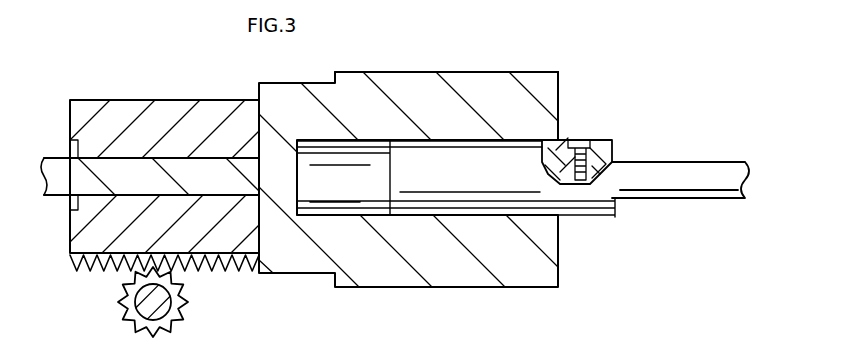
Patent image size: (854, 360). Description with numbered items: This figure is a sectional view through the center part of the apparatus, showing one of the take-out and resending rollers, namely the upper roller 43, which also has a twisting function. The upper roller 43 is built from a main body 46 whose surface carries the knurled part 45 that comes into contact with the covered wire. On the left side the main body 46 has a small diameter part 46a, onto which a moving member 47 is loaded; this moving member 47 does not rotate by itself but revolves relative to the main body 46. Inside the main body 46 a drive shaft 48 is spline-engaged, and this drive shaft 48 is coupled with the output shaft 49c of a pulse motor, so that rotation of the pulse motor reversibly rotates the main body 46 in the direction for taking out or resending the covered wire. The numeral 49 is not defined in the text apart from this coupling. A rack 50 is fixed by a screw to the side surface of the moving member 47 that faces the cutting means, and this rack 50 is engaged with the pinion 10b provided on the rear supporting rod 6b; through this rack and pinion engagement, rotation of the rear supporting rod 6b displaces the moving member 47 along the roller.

The upper roller 43 is at (286, 80).
The knurled part 45 is at (487, 71).
The main body 46 is at (560, 89).
The small diameter part 46a is at (212, 154).
The moving member 47 is at (181, 100).
The drive shaft 48 is at (599, 140).
The inner sleeve 49 is at (456, 178).
The output shaft 49c is at (667, 162).
The rack 50 is at (70, 258).
The rear supporting rod 6b is at (186, 299).
The pinion 10b is at (181, 314).